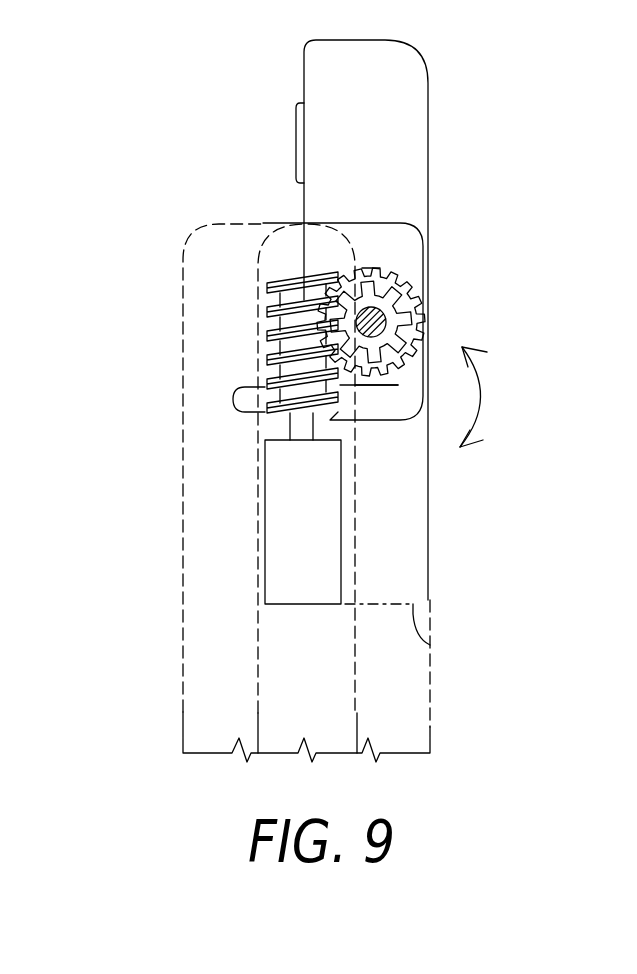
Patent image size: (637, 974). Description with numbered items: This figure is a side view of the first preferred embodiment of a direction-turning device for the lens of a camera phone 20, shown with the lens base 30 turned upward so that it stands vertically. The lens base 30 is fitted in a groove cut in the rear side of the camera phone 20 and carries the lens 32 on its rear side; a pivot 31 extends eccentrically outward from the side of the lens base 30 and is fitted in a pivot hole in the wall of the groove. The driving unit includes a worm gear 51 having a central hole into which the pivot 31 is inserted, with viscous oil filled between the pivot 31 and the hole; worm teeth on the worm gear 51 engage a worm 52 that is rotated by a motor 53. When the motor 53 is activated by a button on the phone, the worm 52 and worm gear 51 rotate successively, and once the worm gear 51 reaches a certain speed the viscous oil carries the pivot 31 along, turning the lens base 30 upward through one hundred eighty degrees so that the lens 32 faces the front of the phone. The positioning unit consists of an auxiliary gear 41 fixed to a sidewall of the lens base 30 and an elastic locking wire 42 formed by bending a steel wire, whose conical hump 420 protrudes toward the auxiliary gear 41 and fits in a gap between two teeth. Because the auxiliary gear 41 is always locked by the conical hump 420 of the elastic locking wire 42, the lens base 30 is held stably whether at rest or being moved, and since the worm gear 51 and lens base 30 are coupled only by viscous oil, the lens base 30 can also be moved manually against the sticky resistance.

The camera phone 20 is at (408, 673).
The lens base 30 is at (407, 127).
The lens 32 is at (298, 143).
The pivot 31 is at (408, 323).
The auxiliary gear 41 is at (370, 272).
The elastic locking wire 42 is at (392, 386).
The conical hump 420 is at (367, 386).
The worm gear 51 is at (390, 302).
The worm 52 is at (275, 340).
The motor 53 is at (322, 548).